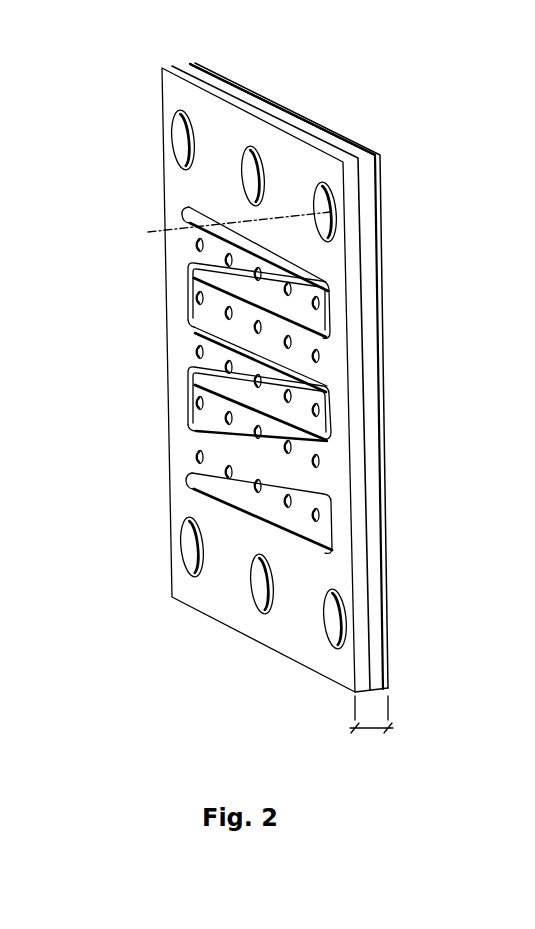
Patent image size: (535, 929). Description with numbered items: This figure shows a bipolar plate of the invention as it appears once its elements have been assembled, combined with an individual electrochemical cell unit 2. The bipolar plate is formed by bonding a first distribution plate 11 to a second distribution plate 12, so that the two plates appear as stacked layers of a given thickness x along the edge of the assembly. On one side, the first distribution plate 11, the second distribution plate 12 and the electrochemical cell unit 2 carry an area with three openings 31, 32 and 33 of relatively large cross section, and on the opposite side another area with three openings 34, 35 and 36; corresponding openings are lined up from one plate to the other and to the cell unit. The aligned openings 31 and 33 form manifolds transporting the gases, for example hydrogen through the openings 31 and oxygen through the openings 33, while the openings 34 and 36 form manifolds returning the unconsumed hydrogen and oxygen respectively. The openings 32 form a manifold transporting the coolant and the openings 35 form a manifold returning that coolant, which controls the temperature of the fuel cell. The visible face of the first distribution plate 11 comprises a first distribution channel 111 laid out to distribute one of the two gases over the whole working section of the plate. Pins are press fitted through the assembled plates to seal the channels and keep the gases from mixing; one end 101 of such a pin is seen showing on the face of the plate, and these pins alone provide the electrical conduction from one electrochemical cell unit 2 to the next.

The electrochemical cell unit 2 is at (378, 293).
The first distribution plate 11 is at (174, 74).
The second distribution plate 12 is at (192, 66).
The opening 31 is at (178, 137).
The opening 32 is at (250, 180).
The opening 33 is at (320, 203).
The opening 34 is at (185, 548).
The opening 35 is at (258, 590).
The opening 36 is at (332, 621).
The first distribution channel 111 is at (183, 327).
The end of pin 101 is at (197, 402).